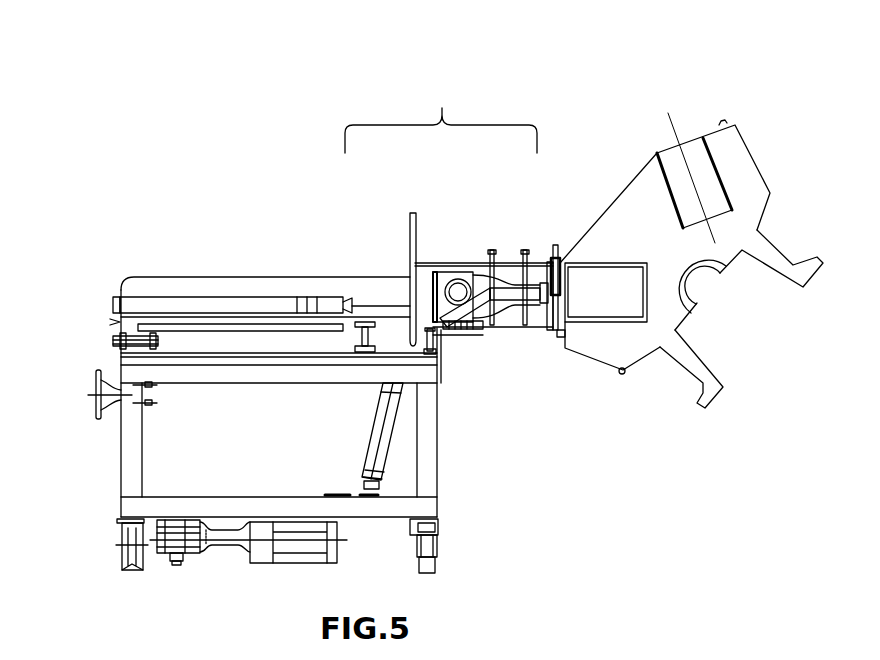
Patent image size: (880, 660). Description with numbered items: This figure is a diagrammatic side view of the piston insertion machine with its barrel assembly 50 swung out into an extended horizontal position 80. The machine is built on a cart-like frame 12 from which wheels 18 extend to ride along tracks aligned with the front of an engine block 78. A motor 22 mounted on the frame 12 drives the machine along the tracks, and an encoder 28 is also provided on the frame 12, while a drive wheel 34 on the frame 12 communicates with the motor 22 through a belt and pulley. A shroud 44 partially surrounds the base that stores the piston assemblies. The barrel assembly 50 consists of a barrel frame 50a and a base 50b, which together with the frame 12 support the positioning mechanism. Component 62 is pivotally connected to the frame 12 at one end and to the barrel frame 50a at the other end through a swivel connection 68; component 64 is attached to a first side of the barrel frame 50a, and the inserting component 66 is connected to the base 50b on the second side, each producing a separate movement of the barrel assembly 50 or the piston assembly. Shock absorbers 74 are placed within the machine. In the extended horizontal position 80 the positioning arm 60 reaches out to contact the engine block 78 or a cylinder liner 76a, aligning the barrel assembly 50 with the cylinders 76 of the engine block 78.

The frame 12 is at (121, 463).
The wheels 18 is at (433, 567).
The motor 22 is at (298, 563).
The encoder 28 is at (185, 543).
The drive wheel 34 is at (96, 395).
The shroud 44 is at (438, 338).
The barrel assembly 50 is at (452, 246).
The barrel frame 50a is at (238, 343).
The base 50b is at (411, 246).
The positioning arm 60 is at (553, 264).
The component 62 is at (386, 462).
The component 64 is at (112, 337).
The component 66 is at (173, 303).
The swivel connection 68 is at (388, 499).
The shock absorbers 74 is at (440, 373).
The cylinders 76 is at (608, 292).
The cylinder liner 76a is at (636, 320).
The engine block 78 is at (751, 154).
The extended horizontal position 80 is at (450, 66).